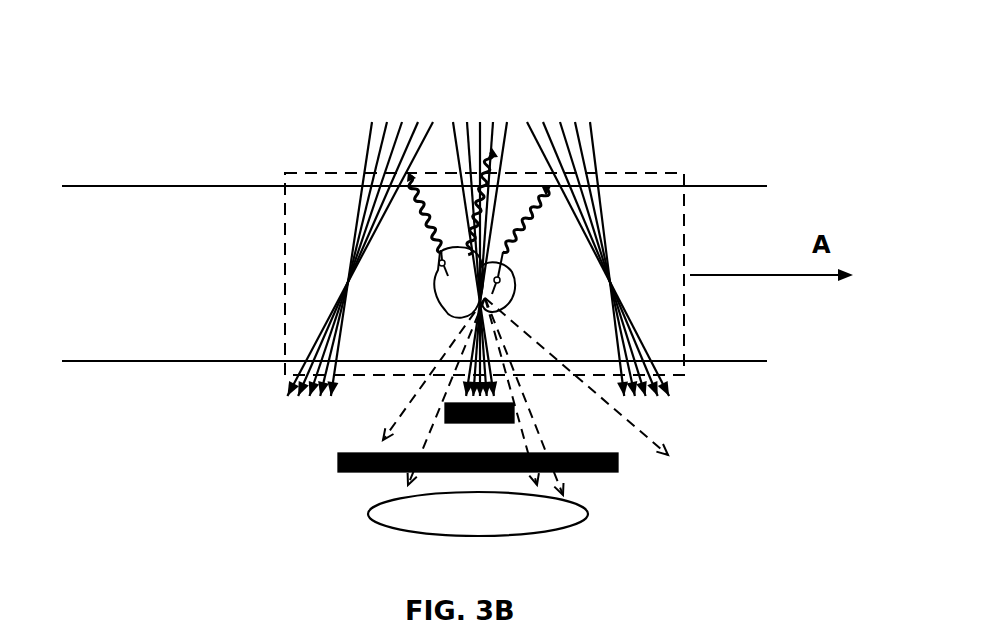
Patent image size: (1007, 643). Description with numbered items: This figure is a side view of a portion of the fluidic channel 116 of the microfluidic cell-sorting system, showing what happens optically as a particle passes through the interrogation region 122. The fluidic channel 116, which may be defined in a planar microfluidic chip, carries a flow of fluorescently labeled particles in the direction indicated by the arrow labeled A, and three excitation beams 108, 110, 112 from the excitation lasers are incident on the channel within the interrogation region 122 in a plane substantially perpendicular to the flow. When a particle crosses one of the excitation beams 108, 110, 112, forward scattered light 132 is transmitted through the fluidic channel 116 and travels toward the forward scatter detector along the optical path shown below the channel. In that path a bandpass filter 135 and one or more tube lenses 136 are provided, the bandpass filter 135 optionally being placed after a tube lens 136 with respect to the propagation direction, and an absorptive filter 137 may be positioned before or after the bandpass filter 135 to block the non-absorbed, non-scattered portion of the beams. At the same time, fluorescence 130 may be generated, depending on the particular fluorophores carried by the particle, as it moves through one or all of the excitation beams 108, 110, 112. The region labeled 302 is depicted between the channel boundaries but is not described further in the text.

The excitation beam 108 is at (398, 98).
The excitation beam 110 is at (478, 98).
The excitation beam 112 is at (580, 98).
The fluidic channel 116 is at (248, 186).
The interrogation region 122 is at (315, 172).
The fluorescence 130 is at (560, 212).
The forward scattered light 132 is at (368, 420).
The bandpass filter 135 is at (363, 472).
The tube lens 136 is at (612, 525).
The absorptive filter 137 is at (517, 421).
The sample region 302 is at (238, 304).